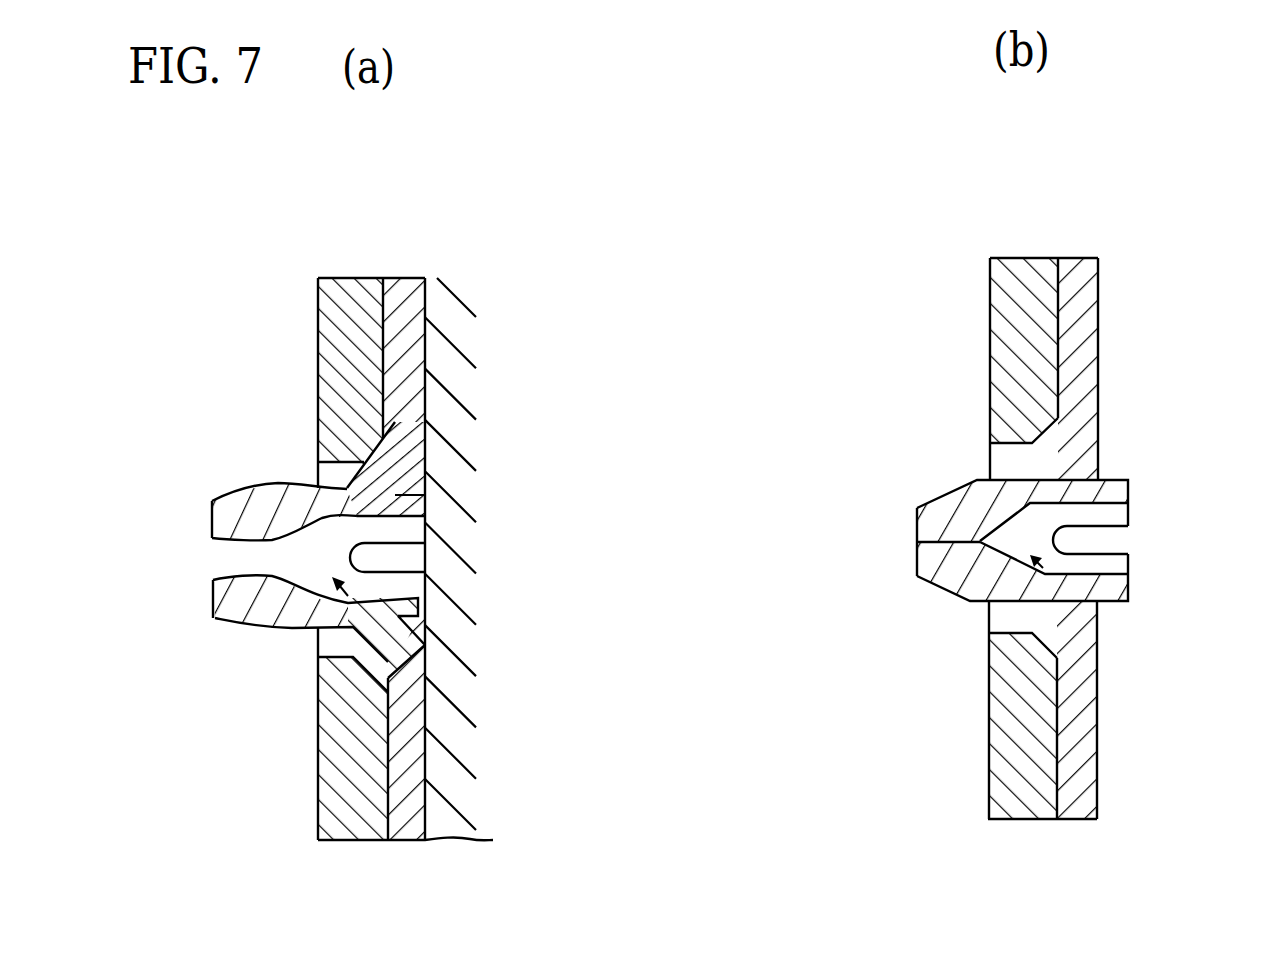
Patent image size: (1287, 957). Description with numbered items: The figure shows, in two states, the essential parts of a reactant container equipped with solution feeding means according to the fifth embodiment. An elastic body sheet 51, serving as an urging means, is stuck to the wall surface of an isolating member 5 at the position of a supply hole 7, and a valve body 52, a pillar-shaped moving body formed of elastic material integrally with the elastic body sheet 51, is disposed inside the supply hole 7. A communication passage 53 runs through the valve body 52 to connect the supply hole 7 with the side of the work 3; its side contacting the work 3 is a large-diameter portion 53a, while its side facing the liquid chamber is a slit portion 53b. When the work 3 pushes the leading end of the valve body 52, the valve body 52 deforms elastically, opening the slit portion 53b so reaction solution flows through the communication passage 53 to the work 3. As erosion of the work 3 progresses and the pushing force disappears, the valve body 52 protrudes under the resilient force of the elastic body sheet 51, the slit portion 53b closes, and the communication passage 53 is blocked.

The work 3 is at (472, 272).
The isolating member 5 is at (318, 327).
The elastic body sheet 51 is at (403, 338).
The valve body 52 is at (416, 513).
The communication passage 53 is at (395, 620).
The large-diameter portion 53a is at (337, 534).
The slit portion 53b is at (228, 560).
The supply hole 7 is at (333, 645).